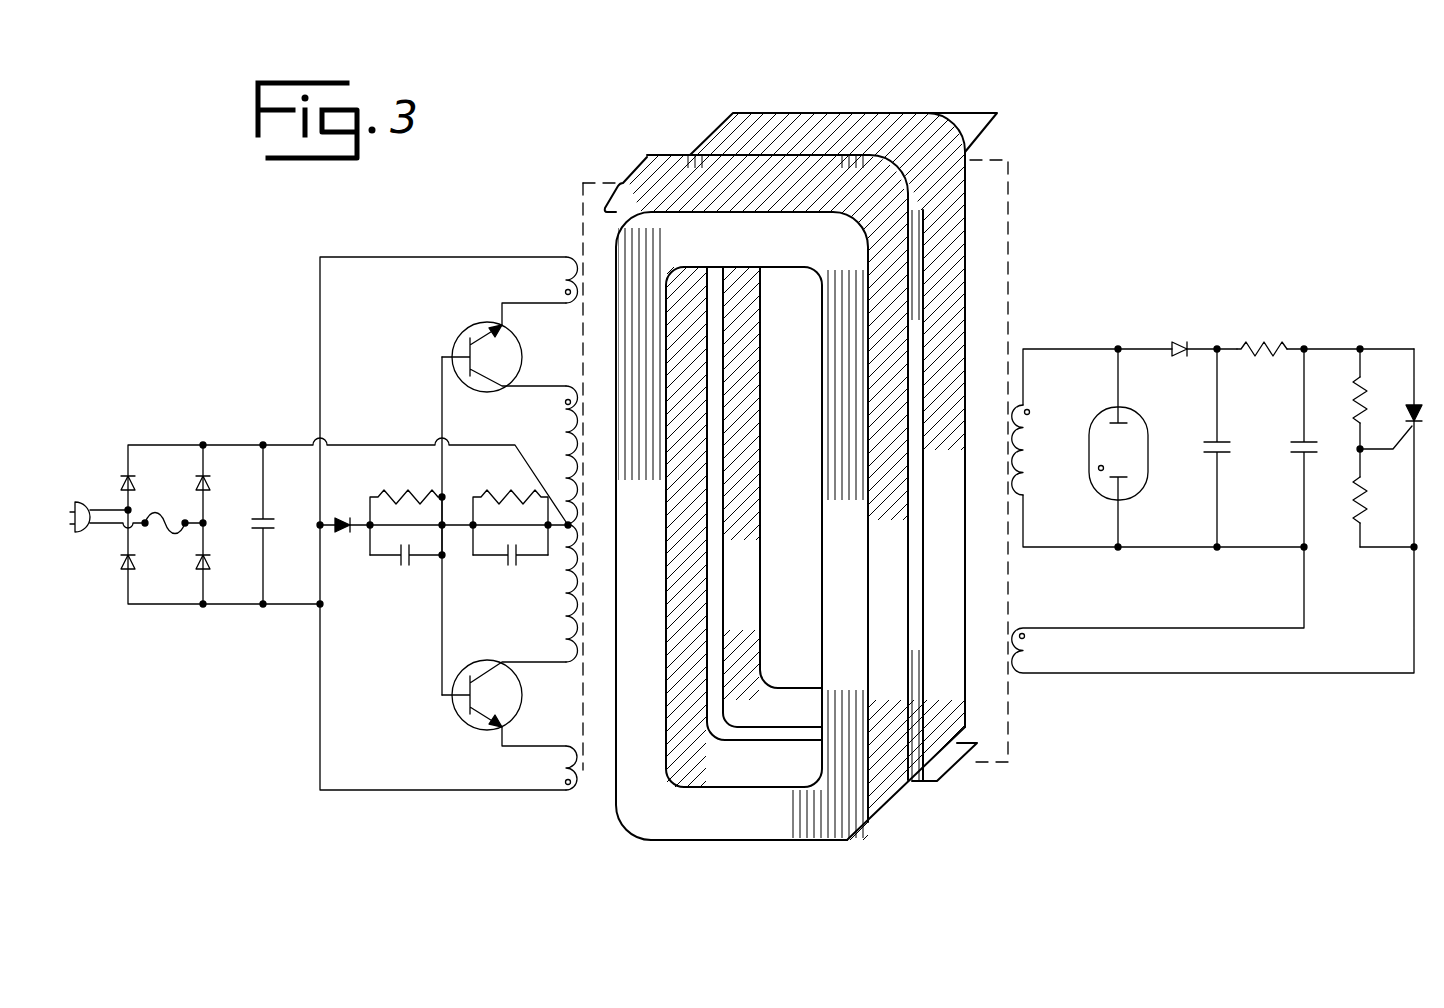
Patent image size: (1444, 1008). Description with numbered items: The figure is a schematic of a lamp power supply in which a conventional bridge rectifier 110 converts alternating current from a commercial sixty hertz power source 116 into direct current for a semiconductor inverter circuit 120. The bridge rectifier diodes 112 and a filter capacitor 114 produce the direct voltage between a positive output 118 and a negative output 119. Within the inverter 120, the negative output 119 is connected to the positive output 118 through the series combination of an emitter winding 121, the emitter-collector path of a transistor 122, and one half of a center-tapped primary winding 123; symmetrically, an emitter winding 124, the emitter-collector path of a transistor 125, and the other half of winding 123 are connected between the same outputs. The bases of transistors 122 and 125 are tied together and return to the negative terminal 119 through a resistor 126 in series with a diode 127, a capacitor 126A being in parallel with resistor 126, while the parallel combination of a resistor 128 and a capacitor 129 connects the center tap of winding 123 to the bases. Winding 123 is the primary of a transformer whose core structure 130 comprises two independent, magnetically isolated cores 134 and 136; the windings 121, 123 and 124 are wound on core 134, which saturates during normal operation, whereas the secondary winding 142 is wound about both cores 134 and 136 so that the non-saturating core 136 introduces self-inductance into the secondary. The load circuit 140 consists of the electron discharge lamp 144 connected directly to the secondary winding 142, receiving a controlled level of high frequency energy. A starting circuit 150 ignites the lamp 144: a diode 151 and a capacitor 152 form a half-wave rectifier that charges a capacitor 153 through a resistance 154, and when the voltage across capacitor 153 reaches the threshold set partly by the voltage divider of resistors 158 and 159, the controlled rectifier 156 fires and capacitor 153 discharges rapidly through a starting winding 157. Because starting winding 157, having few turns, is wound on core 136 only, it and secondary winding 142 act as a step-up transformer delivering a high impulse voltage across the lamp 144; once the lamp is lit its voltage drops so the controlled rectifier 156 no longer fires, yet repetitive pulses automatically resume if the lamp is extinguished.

The bridge rectifier 110 is at (192, 482).
The bridge rectifier diodes 112 is at (197, 482).
The filter capacitor 114 is at (264, 519).
The power source 116 is at (83, 497).
The positive output 118 is at (290, 443).
The negative output 119 is at (303, 607).
The semiconductor inverter circuit 120 is at (469, 480).
The emitter winding 121 is at (566, 296).
The transistor 122 is at (465, 330).
The center-tapped primary winding 123 is at (572, 470).
The emitter winding 124 is at (540, 746).
The transistor 125 is at (460, 720).
The resistor 126 is at (415, 495).
The capacitor 126A is at (405, 567).
The diode 127 is at (343, 532).
The resistor 128 is at (522, 495).
The capacitor 129 is at (512, 567).
The core structure 130 is at (805, 448).
The first core 134 is at (885, 782).
The second core 136 is at (995, 670).
The load circuit 140 is at (1217, 463).
The secondary winding 142 is at (1026, 470).
The electron discharge lamp 144 is at (1130, 500).
The starting circuit 150 is at (1368, 410).
The diode 151 is at (1190, 344).
The capacitor 152 is at (1224, 454).
The capacitor 153 is at (1300, 444).
The resistance 154 is at (1262, 343).
The controlled rectifier 156 is at (1408, 412).
The starting winding 157 is at (1025, 630).
The resistor 158 is at (1354, 405).
The resistor 159 is at (1364, 500).